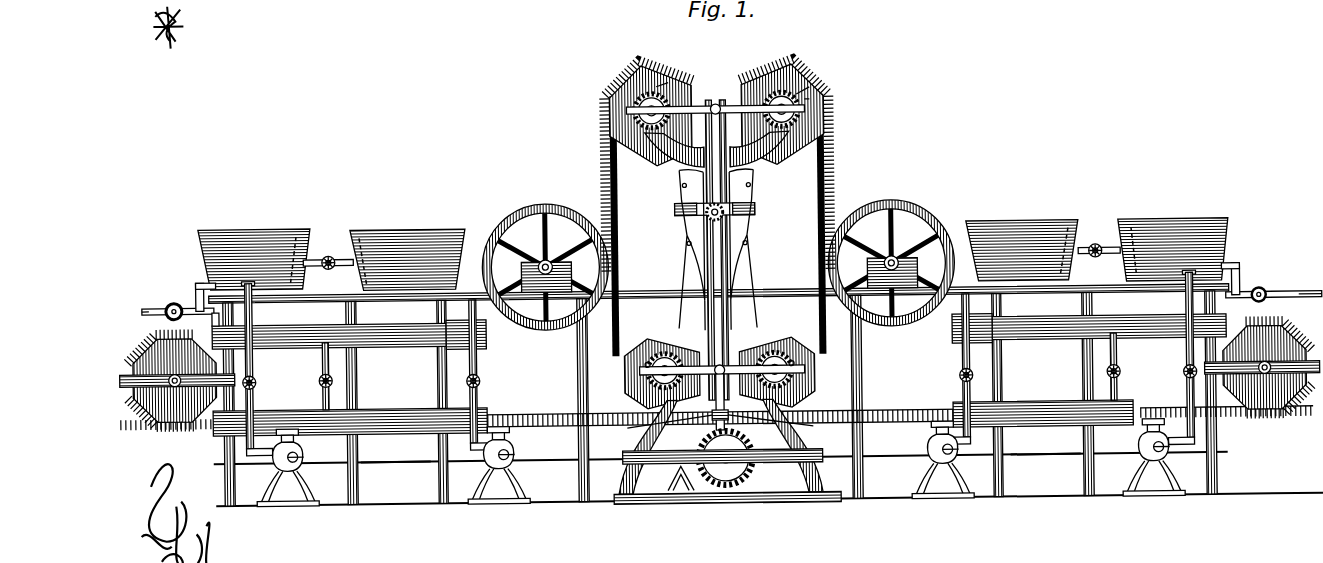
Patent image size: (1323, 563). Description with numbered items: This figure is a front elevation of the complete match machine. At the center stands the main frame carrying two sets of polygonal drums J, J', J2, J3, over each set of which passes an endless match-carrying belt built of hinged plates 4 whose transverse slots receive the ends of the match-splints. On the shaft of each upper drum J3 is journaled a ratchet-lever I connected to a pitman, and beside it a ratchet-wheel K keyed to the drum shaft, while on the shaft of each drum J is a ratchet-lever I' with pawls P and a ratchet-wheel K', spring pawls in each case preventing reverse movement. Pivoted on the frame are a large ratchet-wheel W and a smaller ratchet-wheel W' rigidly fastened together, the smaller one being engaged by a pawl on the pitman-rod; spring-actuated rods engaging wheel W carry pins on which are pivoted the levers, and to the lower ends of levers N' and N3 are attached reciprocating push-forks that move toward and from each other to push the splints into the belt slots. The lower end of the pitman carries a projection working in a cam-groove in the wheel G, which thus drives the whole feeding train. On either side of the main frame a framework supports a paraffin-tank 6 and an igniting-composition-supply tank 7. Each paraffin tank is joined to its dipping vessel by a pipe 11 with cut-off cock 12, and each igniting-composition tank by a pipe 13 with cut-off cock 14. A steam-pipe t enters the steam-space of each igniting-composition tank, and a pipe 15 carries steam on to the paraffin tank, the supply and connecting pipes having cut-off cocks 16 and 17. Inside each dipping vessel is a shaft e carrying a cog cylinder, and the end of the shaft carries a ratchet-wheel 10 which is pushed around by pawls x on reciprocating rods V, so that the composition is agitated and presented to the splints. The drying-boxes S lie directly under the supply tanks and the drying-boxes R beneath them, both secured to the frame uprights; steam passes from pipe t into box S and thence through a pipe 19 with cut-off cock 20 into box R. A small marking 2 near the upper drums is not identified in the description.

The gear 2 is at (693, 128).
The hinged plates 4 is at (620, 185).
The paraffin-tank 6 is at (407, 236).
The igniting-composition-supply tank 7 is at (277, 235).
The ratchet-wheel 10 is at (300, 448).
The pipe 11 is at (478, 353).
The cut-off cock 12 is at (481, 379).
The pipe 13 is at (254, 357).
The cut-off cock 14 is at (257, 379).
The pipe 15 is at (328, 253).
The cut-off cock 16 is at (175, 297).
The cut-off cock 17 is at (331, 262).
The pipe 19 is at (323, 370).
The cut-off cock 20 is at (333, 377).
The ratchet-wheel K is at (717, 170).
The ratchet-wheel K' is at (730, 413).
The polygonal drum J is at (721, 316).
The polygonal drum J' is at (719, 389).
The polygonal drum J2 is at (718, 251).
The polygonal drum J3 is at (672, 82).
The ratchet-lever I is at (715, 93).
The ratchet-lever I' is at (721, 380).
The shaft e is at (813, 100).
The ratchet-wheel W is at (691, 223).
The ratchet-wheel W' is at (727, 199).
The lever N' is at (679, 250).
The lever N3 is at (743, 271).
The pawl P is at (645, 366).
The wheel G is at (747, 471).
The drying-box S is at (392, 322).
The drying-box R is at (673, 407).
The reciprocating rod V is at (721, 471).
The steam-pipe t is at (725, 302).
The pawl x is at (288, 487).